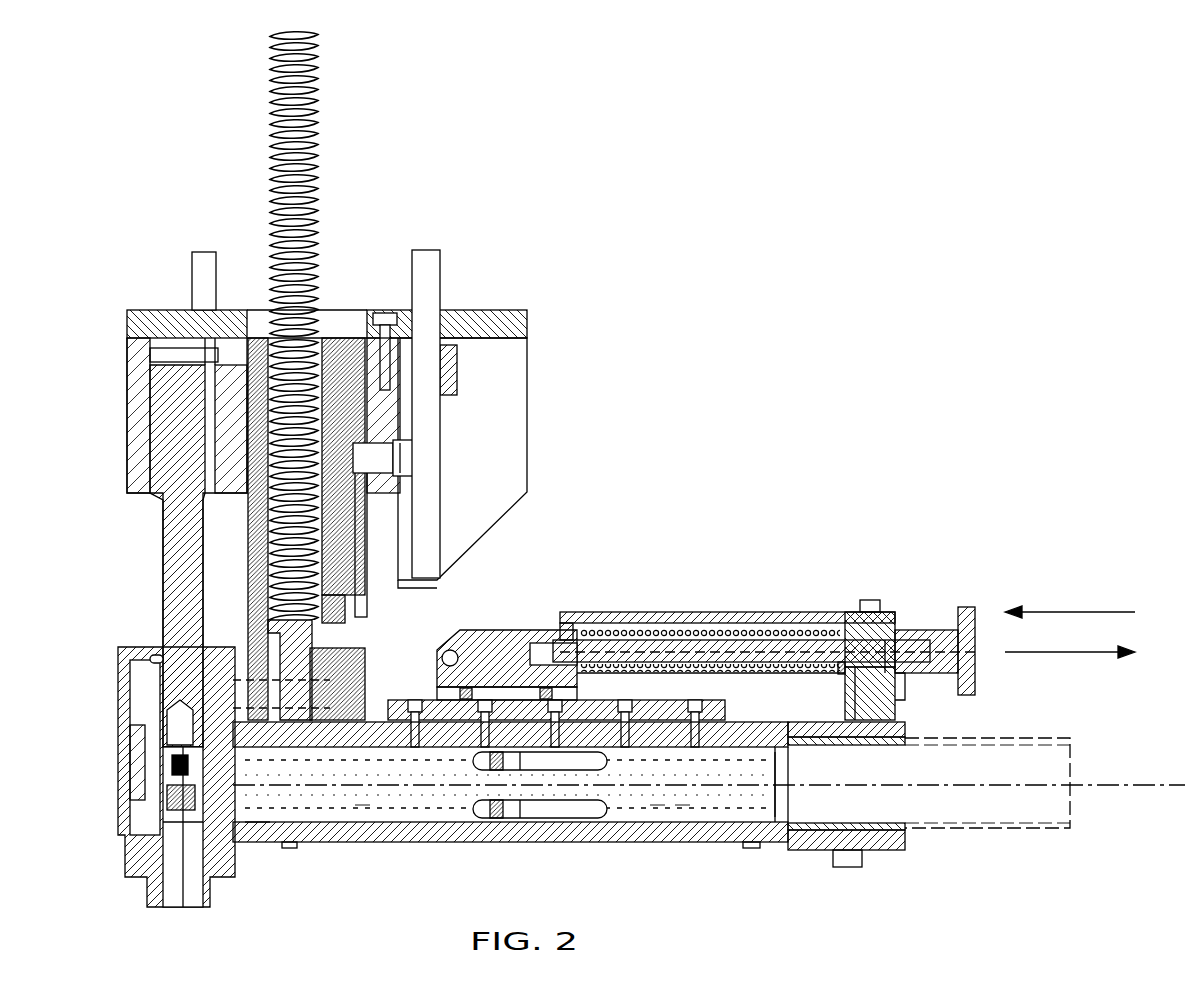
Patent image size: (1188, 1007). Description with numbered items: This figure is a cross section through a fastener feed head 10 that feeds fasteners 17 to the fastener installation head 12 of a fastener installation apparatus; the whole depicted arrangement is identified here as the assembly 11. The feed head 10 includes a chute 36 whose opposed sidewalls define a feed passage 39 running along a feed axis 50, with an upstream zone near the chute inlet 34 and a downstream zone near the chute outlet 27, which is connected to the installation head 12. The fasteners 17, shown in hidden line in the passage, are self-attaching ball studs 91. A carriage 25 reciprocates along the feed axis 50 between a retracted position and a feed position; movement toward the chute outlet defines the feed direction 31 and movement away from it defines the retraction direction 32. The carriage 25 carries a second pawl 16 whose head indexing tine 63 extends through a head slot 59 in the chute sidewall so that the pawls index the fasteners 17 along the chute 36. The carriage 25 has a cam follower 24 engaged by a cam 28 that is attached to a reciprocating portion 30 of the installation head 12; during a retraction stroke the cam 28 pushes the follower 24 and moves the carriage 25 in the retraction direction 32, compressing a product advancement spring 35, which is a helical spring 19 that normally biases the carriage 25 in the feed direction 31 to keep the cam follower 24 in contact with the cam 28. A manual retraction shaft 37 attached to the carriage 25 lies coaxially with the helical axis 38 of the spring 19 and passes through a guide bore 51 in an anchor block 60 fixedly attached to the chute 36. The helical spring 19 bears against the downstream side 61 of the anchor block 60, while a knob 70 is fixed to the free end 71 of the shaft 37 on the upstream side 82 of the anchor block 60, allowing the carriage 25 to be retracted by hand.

The fastener feed head 10 is at (424, 845).
The actuator assembly 11 is at (572, 133).
The fastener installation head 12 is at (148, 877).
The second pawl 16 is at (507, 812).
The fastener 17 is at (659, 808).
The helical spring 19 is at (802, 630).
The cam follower 24 is at (454, 650).
The carriage 25 is at (498, 648).
The chute outlet 27 is at (257, 815).
The cam 28 is at (505, 516).
The reciprocating portion 30 is at (530, 381).
The feed direction 31 is at (1082, 612).
The retraction direction 32 is at (1082, 655).
The chute inlet 34 is at (790, 747).
The product advancement spring 35 is at (720, 648).
The chute 36 is at (912, 740).
The manual retraction shaft 37 is at (866, 650).
The helical axis 38 is at (672, 623).
The feed passage 39 is at (393, 813).
The feed axis 50 is at (1125, 790).
The guide bore 51 is at (877, 657).
The head slot 59 is at (452, 755).
The anchor block 60 is at (895, 715).
The downstream side 61 is at (840, 678).
The head indexing tine 63 is at (515, 770).
The knob 70 is at (966, 650).
The free end 71 is at (885, 652).
The upstream side 82 is at (897, 687).
The self-attaching ball stud 91 is at (362, 813).